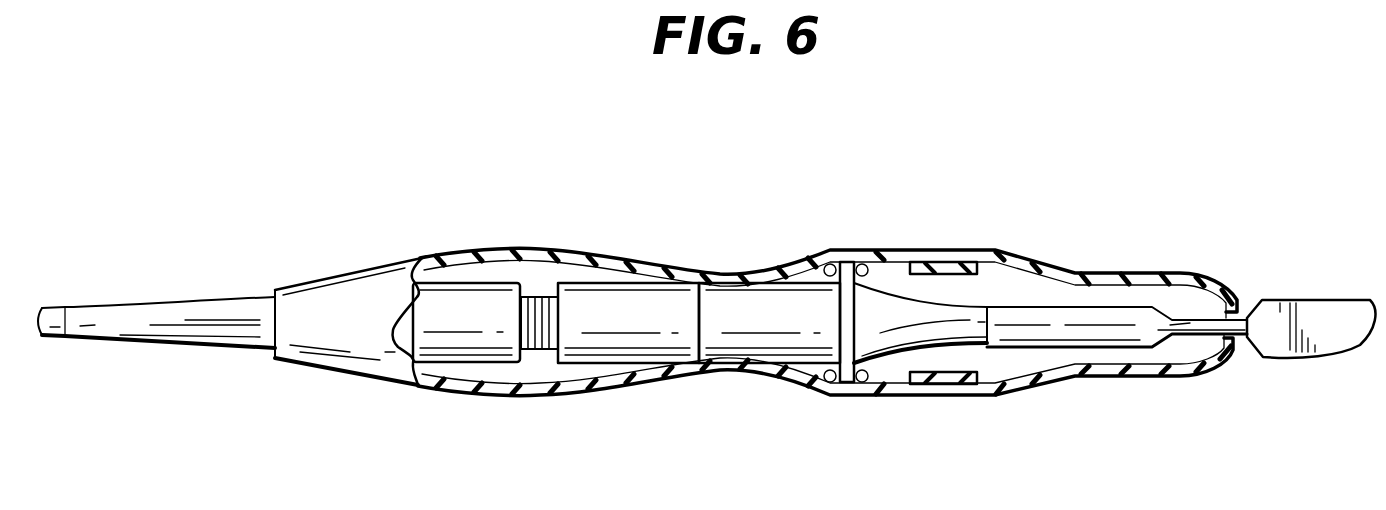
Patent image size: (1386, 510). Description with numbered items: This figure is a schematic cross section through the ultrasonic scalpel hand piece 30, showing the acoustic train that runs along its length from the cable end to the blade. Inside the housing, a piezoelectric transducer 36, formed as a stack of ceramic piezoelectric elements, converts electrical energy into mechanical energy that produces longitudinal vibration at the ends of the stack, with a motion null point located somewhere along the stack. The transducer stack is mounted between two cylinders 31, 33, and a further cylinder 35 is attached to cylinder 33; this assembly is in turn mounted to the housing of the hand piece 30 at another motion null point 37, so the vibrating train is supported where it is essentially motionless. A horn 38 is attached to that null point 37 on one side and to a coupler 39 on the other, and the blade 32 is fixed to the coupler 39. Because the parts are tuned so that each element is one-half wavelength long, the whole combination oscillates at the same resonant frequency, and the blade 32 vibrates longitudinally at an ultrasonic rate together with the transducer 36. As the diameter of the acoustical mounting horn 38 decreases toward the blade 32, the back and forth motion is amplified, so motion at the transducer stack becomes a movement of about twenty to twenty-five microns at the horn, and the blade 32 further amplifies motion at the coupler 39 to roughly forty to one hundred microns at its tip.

The ultrasonic hand piece 30 is at (715, 250).
The cylinder 31 is at (448, 312).
The blade 32 is at (1314, 318).
The cylinder 33 is at (628, 344).
The cylinder 35 is at (752, 344).
The piezoelectric transducer 36 is at (538, 298).
The motion null point 37 is at (853, 262).
The horn 38 is at (897, 314).
The coupler 39 is at (1077, 314).